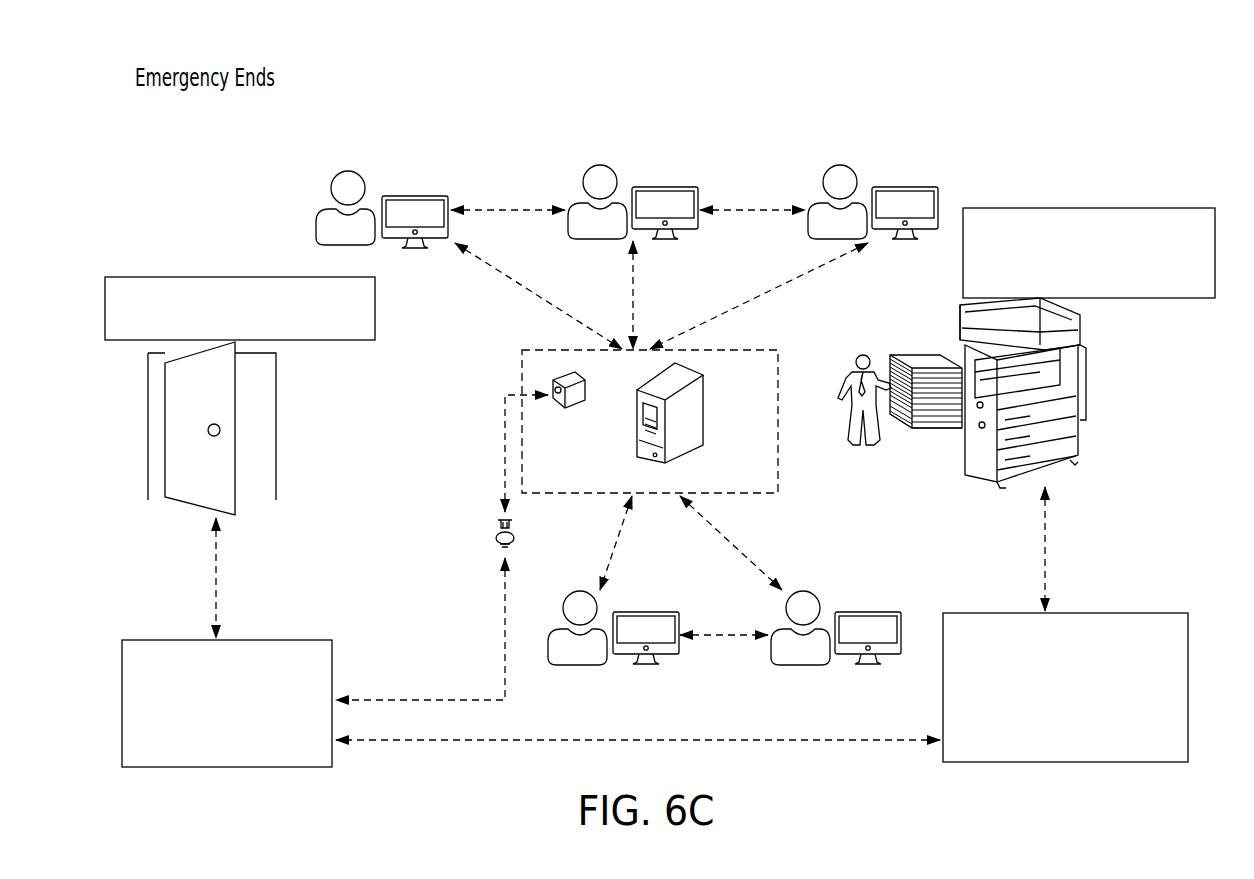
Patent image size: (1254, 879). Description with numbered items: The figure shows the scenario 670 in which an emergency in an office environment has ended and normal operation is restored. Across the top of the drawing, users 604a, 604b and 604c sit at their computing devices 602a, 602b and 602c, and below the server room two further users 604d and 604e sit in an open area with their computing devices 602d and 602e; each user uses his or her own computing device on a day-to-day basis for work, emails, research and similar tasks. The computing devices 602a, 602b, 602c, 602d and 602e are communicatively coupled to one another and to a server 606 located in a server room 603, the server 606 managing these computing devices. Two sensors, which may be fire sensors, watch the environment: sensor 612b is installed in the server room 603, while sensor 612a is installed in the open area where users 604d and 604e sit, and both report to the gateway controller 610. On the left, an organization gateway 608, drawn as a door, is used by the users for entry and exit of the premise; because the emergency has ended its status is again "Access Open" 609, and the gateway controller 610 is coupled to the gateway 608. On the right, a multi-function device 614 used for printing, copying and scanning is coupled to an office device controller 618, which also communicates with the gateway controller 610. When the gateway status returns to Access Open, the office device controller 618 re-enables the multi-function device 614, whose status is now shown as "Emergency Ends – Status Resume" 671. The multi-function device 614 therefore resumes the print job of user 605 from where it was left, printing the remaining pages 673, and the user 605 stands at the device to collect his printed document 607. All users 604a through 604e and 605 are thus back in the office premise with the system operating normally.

The emergency ends scenario 670 is at (506, 102).
The Access Open status 609 is at (236, 277).
The organization gateway 608 is at (236, 480).
The gateway controller 610 is at (258, 640).
The office device controller 618 is at (1130, 613).
The Resume status 671 is at (1015, 278).
The server room 603 is at (780, 437).
The server 606 is at (703, 426).
The sensor 612a is at (500, 519).
The sensor 612b is at (552, 378).
The user 604a is at (348, 171).
The computing device 602a is at (414, 196).
The user 604b is at (601, 165).
The computing device 602b is at (664, 187).
The user 604c is at (840, 165).
The computing device 602c is at (904, 187).
The user 604d is at (579, 591).
The computing device 602d is at (646, 612).
The user 604e is at (800, 591).
The computing device 602e is at (868, 612).
The user 605 is at (864, 355).
The printed document 607 is at (926, 355).
The remaining pages 673 is at (930, 426).
The multi-function device 614 is at (1060, 452).